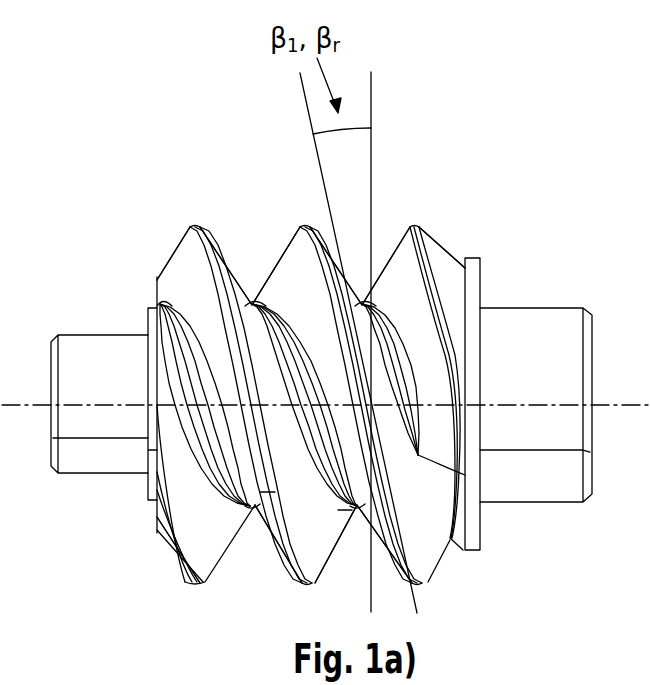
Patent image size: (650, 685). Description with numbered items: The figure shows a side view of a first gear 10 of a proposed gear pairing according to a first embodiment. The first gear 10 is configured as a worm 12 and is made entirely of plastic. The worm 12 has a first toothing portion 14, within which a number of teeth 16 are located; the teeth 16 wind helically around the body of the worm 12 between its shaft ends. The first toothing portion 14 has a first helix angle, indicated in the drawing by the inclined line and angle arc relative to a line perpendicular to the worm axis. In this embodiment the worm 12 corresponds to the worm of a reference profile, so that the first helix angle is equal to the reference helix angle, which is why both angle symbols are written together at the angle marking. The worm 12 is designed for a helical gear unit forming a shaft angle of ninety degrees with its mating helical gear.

The first gear 10 is at (130, 168).
The worm 12 is at (130, 168).
The first toothing portion 14 is at (413, 248).
The teeth 16 is at (413, 248).